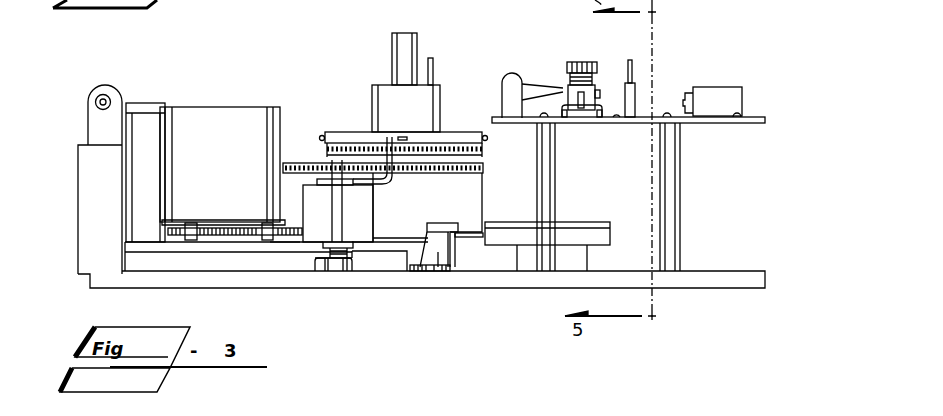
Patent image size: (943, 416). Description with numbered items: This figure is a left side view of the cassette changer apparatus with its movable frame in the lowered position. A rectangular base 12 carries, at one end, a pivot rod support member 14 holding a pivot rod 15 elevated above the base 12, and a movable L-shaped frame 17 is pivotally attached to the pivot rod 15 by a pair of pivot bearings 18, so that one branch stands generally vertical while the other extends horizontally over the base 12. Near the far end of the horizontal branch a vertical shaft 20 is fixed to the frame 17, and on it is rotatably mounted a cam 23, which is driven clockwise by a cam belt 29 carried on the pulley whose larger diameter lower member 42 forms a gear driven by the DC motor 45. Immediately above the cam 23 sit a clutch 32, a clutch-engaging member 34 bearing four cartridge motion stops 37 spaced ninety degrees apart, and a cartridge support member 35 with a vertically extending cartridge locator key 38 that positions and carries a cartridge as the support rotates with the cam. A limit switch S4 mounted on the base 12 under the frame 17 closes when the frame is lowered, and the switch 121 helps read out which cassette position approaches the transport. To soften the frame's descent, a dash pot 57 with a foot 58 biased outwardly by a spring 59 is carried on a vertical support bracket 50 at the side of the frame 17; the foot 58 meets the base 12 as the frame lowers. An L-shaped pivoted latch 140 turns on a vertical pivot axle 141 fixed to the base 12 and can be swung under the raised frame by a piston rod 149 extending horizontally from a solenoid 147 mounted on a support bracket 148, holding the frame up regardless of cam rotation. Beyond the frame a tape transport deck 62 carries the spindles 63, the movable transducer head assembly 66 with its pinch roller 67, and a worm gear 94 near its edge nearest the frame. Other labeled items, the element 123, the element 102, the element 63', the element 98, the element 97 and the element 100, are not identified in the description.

The base 12 is at (740, 268).
The pivot rod support member 14 is at (82, 162).
The pivot rod 15 is at (102, 95).
The pivot bearings 18 is at (97, 100).
The switch 121 is at (142, 103).
The DC motor 45 is at (198, 118).
The carriage plate 123 is at (147, 232).
The larger diameter lower member 42 is at (288, 240).
The dash pot 57 is at (337, 218).
The spring 59 is at (324, 260).
The foot 58 is at (337, 263).
The vertical support bracket 50 is at (313, 193).
The cartridge motion stops 37 is at (323, 138).
The clutch 32 is at (363, 147).
The clutch-engaging member 34 is at (452, 143).
The cam belt 29 is at (422, 173).
The cartridge support member 35 is at (415, 113).
The vertical shaft 20 is at (392, 57).
The cartridge locator key 38 is at (433, 62).
The cam 23 is at (410, 215).
The pivoted latch 140 is at (426, 240).
The limit switch S4 is at (428, 254).
The L-shaped frame 17 is at (438, 270).
The vertical pivot axle 141 is at (455, 254).
The piston rod 149 is at (477, 238).
The solenoid 147 is at (575, 223).
The support bracket 148 is at (537, 260).
The tape transport deck 62 is at (752, 115).
The worm gear 94 is at (517, 72).
The connecting tube 102 is at (539, 84).
The spindles 63 is at (582, 71).
The valve port 63' is at (610, 62).
The valve foot 98 is at (566, 120).
The valve stem 97 is at (583, 123).
The valve foot 100 is at (605, 113).
The pinch roller 67 is at (688, 98).
The transducer head assembly 66 is at (723, 93).